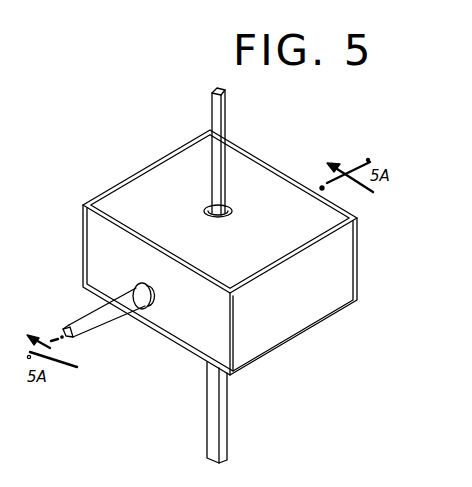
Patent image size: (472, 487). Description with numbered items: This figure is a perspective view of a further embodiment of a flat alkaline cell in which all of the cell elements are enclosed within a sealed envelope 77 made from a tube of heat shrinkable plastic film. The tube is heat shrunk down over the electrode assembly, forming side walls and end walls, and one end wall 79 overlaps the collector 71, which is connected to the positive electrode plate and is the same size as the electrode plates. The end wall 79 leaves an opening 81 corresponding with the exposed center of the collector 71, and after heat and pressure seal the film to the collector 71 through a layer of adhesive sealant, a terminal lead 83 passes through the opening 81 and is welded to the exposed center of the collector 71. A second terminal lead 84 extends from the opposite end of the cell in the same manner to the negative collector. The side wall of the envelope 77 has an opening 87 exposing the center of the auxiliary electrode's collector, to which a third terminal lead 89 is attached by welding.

The collector 71 is at (222, 218).
The sealed envelope 77 is at (168, 322).
The end wall 79 is at (167, 177).
The opening 81 is at (233, 212).
The terminal lead 83 is at (226, 114).
The terminal lead 84 is at (228, 399).
The opening 87 is at (138, 281).
The third terminal lead 89 is at (110, 314).